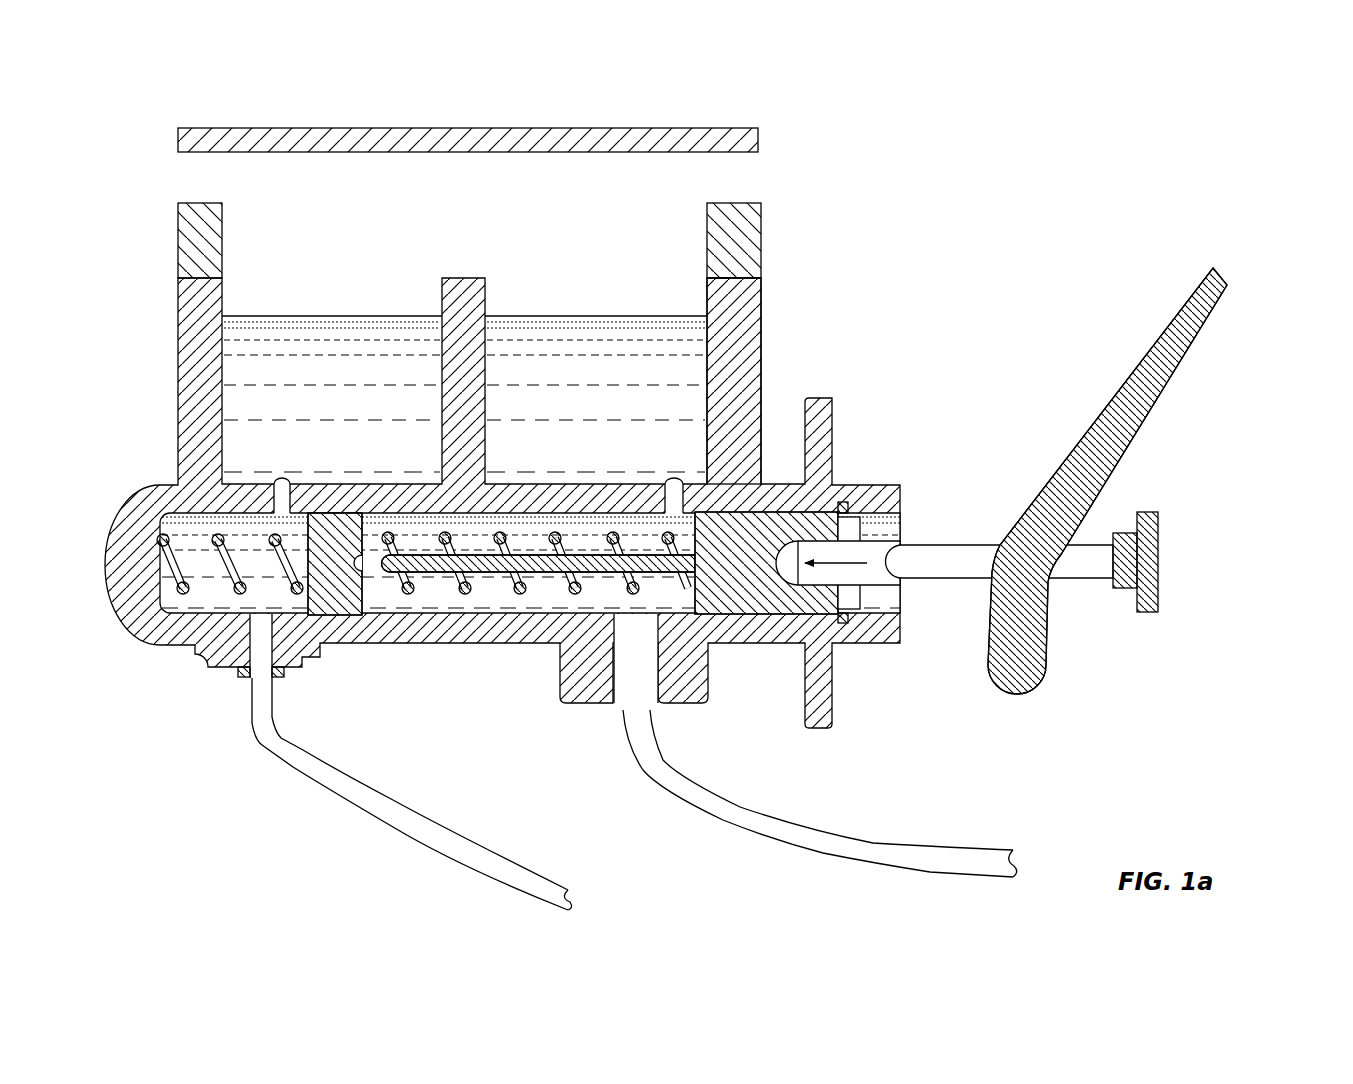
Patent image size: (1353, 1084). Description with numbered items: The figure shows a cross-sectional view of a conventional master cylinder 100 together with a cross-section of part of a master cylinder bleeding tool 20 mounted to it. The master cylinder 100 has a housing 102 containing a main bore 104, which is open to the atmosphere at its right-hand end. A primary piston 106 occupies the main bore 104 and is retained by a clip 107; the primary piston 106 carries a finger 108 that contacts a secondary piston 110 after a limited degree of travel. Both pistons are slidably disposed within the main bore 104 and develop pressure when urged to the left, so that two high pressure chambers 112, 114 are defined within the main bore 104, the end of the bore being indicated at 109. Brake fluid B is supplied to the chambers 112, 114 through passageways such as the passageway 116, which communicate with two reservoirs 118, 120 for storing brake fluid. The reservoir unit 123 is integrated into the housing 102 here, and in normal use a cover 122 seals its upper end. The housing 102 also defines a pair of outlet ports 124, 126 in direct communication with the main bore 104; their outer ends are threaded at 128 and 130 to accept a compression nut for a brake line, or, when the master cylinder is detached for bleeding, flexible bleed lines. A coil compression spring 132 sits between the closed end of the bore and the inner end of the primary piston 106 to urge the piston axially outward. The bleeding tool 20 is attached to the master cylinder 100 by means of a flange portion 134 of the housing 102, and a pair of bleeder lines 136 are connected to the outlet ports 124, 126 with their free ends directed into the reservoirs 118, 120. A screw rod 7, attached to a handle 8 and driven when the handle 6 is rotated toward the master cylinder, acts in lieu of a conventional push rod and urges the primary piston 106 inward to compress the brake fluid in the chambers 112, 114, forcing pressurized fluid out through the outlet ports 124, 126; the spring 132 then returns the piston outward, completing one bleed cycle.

The master cylinder 100 is at (788, 273).
The housing 102 is at (446, 646).
The main bore 104 is at (488, 616).
The primary piston 106 is at (755, 602).
The clip 107 is at (850, 504).
The finger 108 is at (532, 548).
The bore end 109 is at (167, 520).
The secondary piston 110 is at (342, 560).
The high pressure chamber 112 is at (388, 590).
The high pressure chamber 114 is at (213, 592).
The passageway 116 is at (282, 500).
The reservoir 118 is at (612, 345).
The reservoir 120 is at (372, 345).
The cover 122 is at (588, 127).
The reservoir unit 123 is at (742, 372).
The outlet port 124 is at (608, 662).
The outlet port 126 is at (250, 672).
The threaded end 128 is at (672, 707).
The threaded end 130 is at (296, 680).
The coil compression spring 132 is at (618, 580).
The flange portion 134 is at (832, 424).
The bleeder lines 136 is at (440, 838).
The brake fluid B is at (290, 315).
The handle 6 is at (1090, 425).
The screw rod 7 is at (1085, 586).
The handle 8 is at (1160, 582).
The master cylinder bleeding tool 20 is at (1132, 322).